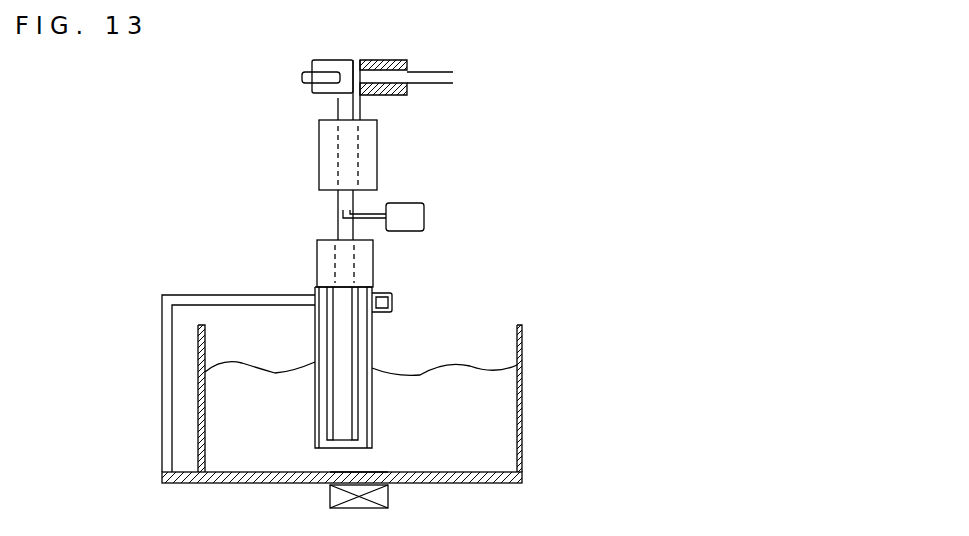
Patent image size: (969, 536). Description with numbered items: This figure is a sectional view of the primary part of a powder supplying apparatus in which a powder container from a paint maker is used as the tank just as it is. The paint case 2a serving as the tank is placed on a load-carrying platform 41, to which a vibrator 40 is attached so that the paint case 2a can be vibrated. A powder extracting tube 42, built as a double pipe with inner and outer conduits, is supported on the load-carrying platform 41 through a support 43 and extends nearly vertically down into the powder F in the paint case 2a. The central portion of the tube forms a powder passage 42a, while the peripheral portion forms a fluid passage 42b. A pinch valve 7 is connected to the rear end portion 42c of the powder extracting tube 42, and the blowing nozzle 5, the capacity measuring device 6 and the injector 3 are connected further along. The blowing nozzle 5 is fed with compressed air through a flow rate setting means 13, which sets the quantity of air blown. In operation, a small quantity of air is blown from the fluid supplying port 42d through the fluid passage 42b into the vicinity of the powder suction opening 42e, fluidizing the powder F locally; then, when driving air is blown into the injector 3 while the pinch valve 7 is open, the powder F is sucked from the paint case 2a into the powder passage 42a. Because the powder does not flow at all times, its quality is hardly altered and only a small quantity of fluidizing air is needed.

The injector 3 is at (340, 88).
The powder flow rate measuring device 6 is at (377, 152).
The blowing nozzle 5 is at (338, 207).
The flow rate setting means 13 is at (424, 218).
The pinch valve 7 is at (316, 253).
The support 43 is at (161, 385).
The paint case 2a is at (521, 413).
The load-carrying platform 41 is at (505, 484).
The powder F is at (361, 399).
The powder extracting tube 42 is at (313, 351).
The powder passage 42a is at (345, 350).
The fluid passage 42b is at (380, 357).
The rear end portion 42c is at (315, 295).
The fluid supplying port 42d is at (392, 303).
The powder suction opening 42e is at (305, 478).
The vibrator 40 is at (388, 496).